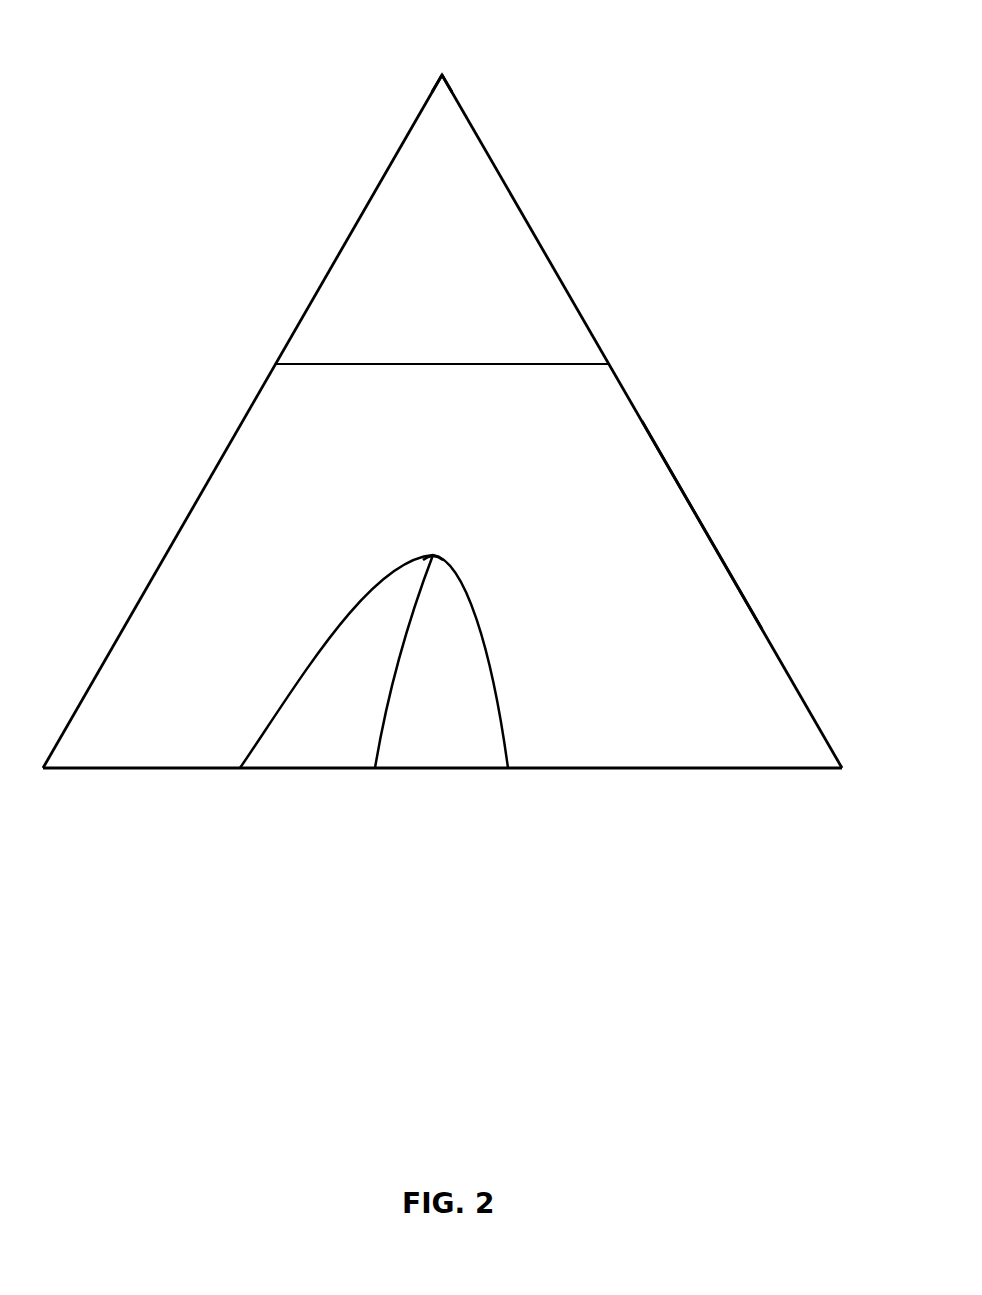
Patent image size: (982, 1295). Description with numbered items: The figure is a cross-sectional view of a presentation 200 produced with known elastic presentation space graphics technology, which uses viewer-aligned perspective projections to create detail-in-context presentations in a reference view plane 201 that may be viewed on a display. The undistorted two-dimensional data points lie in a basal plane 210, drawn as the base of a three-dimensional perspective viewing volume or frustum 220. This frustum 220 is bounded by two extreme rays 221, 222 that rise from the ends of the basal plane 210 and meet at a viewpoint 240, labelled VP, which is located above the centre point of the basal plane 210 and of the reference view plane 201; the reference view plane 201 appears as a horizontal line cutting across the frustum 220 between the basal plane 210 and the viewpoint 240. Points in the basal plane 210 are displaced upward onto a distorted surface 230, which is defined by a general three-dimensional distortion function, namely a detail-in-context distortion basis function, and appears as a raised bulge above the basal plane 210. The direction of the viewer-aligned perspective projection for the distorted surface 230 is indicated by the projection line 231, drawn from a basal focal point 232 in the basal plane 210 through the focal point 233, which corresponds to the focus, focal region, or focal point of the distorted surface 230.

The presentation 200 is at (830, 195).
The reference view plane 201 is at (413, 364).
The basal plane 210 is at (627, 768).
The frustum 220 is at (743, 670).
The extreme ray 221 is at (705, 517).
The extreme ray 222 is at (180, 535).
The distorted surface 230 is at (490, 670).
The line FPo-FP 231 is at (395, 653).
The point FPo 232 is at (375, 768).
The point FP 233 is at (433, 555).
The viewpoint 240 is at (452, 73).